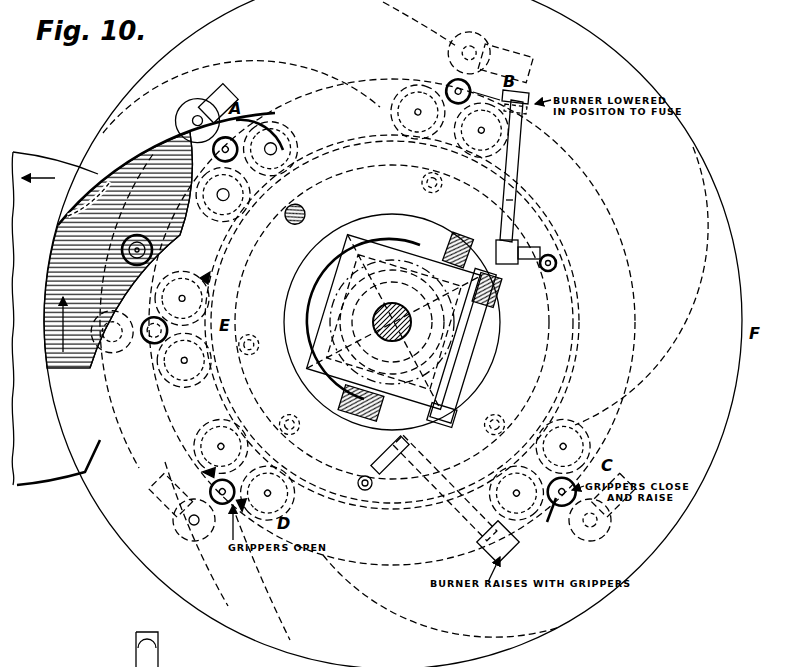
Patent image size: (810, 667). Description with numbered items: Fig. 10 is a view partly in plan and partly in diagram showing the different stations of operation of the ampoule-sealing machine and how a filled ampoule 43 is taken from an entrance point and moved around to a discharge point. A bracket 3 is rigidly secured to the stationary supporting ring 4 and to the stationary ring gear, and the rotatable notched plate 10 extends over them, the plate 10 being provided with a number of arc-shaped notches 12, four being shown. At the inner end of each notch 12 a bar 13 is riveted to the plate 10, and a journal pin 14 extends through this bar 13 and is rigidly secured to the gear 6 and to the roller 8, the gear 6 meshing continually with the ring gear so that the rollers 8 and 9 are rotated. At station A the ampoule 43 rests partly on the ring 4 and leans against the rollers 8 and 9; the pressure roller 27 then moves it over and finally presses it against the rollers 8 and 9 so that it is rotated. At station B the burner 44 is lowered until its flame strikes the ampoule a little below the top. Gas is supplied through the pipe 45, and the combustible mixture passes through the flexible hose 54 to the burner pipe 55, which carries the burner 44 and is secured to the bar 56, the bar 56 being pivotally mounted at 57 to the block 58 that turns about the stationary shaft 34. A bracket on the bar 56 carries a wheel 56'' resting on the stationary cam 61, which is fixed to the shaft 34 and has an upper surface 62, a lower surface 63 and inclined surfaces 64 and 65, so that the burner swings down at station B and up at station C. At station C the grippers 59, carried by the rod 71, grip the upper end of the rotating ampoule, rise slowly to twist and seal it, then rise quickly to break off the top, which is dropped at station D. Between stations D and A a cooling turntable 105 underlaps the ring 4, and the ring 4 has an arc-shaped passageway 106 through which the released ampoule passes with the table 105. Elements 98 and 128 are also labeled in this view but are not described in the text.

The bracket 3 is at (509, 202).
The stationary supporting ring 4 is at (136, 179).
The gear 6 is at (210, 280).
The roller 8 is at (607, 657).
The roller 9 is at (366, 305).
The rotatable notched plate 10 is at (124, 118).
The arc-shaped notch 12 is at (158, 153).
The bar 13 is at (200, 206).
The journal pin 14 is at (247, 172).
The pressure roller 27 is at (198, 104).
The stationary shaft 34 is at (124, 642).
The ampoule 43 is at (208, 150).
The burner 44 is at (523, 94).
The hose or pipe 45 is at (458, 80).
The flexible hose 54 is at (557, 263).
The burner pipe 55 is at (516, 158).
The bar 56 is at (421, 322).
The wheel 56'' is at (507, 291).
The pivot 57 is at (481, 388).
The block 58 is at (333, 305).
The grippers or jaws 59 is at (568, 448).
The stationary cam 61 is at (347, 219).
The upper surface 62 is at (318, 268).
The lower surface 63 is at (495, 366).
The inclined surface 64 is at (468, 240).
The inclined surface 65 is at (351, 418).
The rod 71 is at (375, 304).
The gripper arm 98 is at (550, 518).
The cooling turntable 105 is at (43, 151).
The arc-shaped passageway 106 is at (78, 217).
The roller 128 is at (82, 354).